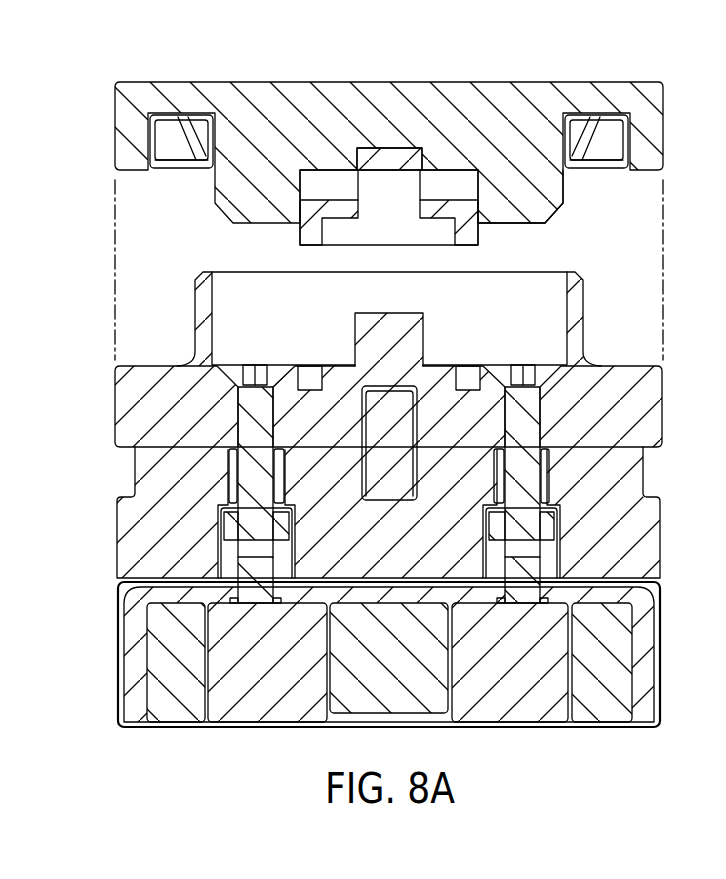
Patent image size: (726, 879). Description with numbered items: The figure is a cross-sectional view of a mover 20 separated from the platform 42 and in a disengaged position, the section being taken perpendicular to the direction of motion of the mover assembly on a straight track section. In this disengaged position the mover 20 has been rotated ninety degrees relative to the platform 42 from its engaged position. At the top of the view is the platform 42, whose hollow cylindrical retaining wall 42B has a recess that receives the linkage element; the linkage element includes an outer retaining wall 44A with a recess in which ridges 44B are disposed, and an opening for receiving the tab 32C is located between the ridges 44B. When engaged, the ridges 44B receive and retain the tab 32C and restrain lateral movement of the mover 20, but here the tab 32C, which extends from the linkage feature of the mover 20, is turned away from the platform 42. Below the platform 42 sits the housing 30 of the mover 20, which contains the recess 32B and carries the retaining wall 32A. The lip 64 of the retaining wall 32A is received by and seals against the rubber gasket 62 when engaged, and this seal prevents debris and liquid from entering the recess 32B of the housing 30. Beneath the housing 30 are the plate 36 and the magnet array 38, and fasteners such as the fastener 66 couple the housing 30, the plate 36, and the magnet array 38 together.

The mover 20 is at (682, 370).
The housing 30 is at (158, 393).
The retaining wall 32A is at (198, 292).
The recess 32B is at (308, 333).
The tab 32C is at (423, 338).
The plate 36 is at (135, 472).
The magnet array 38 is at (118, 651).
The platform 42 is at (290, 82).
The retaining wall 42B is at (545, 223).
The outer retaining wall 44A is at (300, 225).
The ridge 44B is at (358, 207).
The rubber gasket 62 is at (198, 137).
The lip 64 is at (588, 272).
The fastener 66 is at (543, 467).